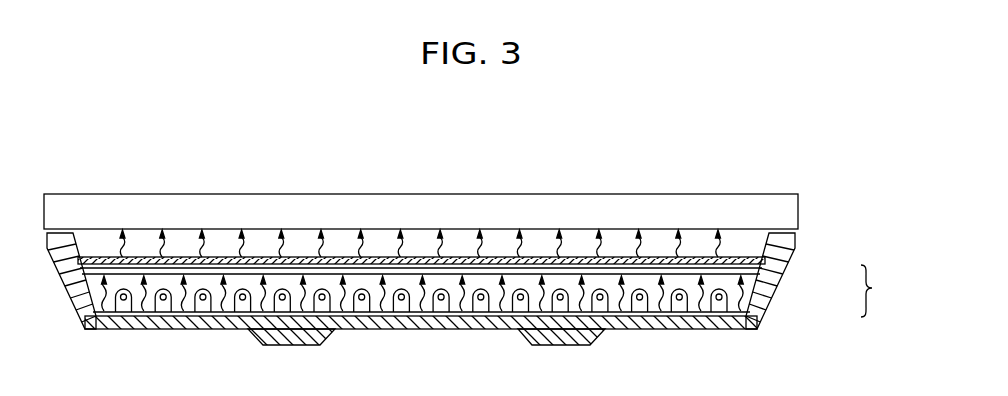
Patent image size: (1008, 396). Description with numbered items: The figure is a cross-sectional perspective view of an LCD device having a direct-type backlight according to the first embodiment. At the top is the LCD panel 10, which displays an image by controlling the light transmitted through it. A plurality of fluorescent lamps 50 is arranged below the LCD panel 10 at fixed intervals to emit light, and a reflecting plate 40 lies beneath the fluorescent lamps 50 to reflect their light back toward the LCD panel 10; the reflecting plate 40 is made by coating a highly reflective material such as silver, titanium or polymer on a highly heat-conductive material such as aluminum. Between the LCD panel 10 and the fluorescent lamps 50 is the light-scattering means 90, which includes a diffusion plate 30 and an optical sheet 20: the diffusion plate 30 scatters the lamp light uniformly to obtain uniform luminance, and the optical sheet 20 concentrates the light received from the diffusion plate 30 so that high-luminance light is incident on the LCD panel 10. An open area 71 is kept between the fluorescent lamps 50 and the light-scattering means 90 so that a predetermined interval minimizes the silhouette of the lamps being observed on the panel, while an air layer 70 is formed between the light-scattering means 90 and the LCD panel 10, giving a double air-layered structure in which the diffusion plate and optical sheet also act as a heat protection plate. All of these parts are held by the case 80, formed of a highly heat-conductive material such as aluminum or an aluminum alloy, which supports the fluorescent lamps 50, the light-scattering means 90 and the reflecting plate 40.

The LCD panel 10 is at (797, 205).
The optical sheet 20 is at (759, 261).
The diffusion plate 30 is at (760, 271).
The reflecting plate 40 is at (757, 302).
The fluorescent lamps 50 is at (720, 306).
The air layer 70 is at (695, 245).
The open area 71 is at (732, 282).
The case 80 is at (797, 245).
The light-scattering means 90 is at (888, 291).